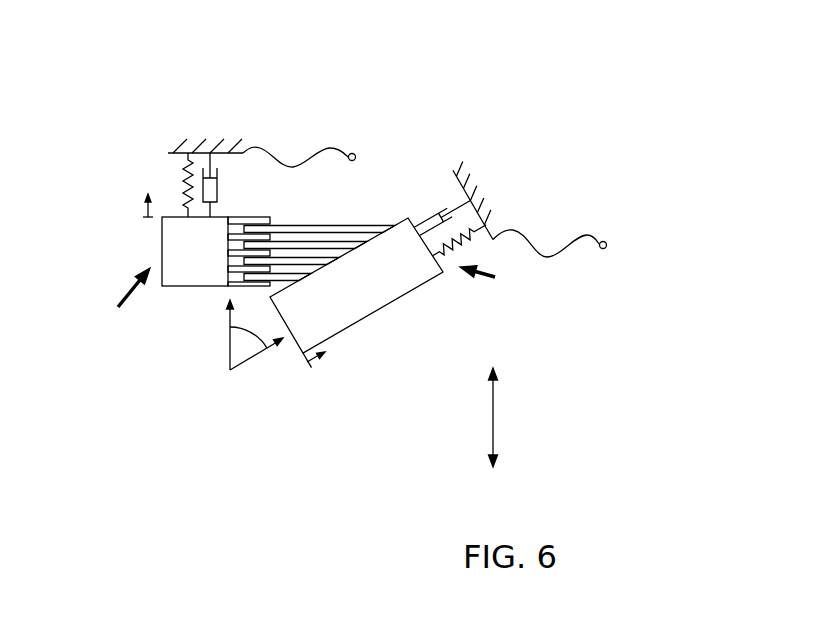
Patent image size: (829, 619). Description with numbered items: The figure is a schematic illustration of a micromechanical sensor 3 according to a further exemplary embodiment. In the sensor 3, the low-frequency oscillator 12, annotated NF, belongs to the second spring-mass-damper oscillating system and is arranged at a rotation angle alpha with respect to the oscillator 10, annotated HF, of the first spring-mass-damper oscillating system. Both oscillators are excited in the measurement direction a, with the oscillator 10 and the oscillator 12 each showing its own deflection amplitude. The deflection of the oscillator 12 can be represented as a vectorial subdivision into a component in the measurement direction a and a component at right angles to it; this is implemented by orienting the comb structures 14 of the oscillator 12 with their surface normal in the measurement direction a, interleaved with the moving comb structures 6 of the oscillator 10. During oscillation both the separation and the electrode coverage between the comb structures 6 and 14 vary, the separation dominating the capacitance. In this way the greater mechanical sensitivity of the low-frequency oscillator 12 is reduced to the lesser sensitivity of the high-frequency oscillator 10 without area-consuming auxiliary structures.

The micromechanical sensor 3 is at (363, 245).
The moving comb structures 6 is at (331, 228).
The oscillator 10 is at (162, 258).
The low-frequency oscillator 12 is at (372, 315).
The comb structures 14 is at (360, 223).